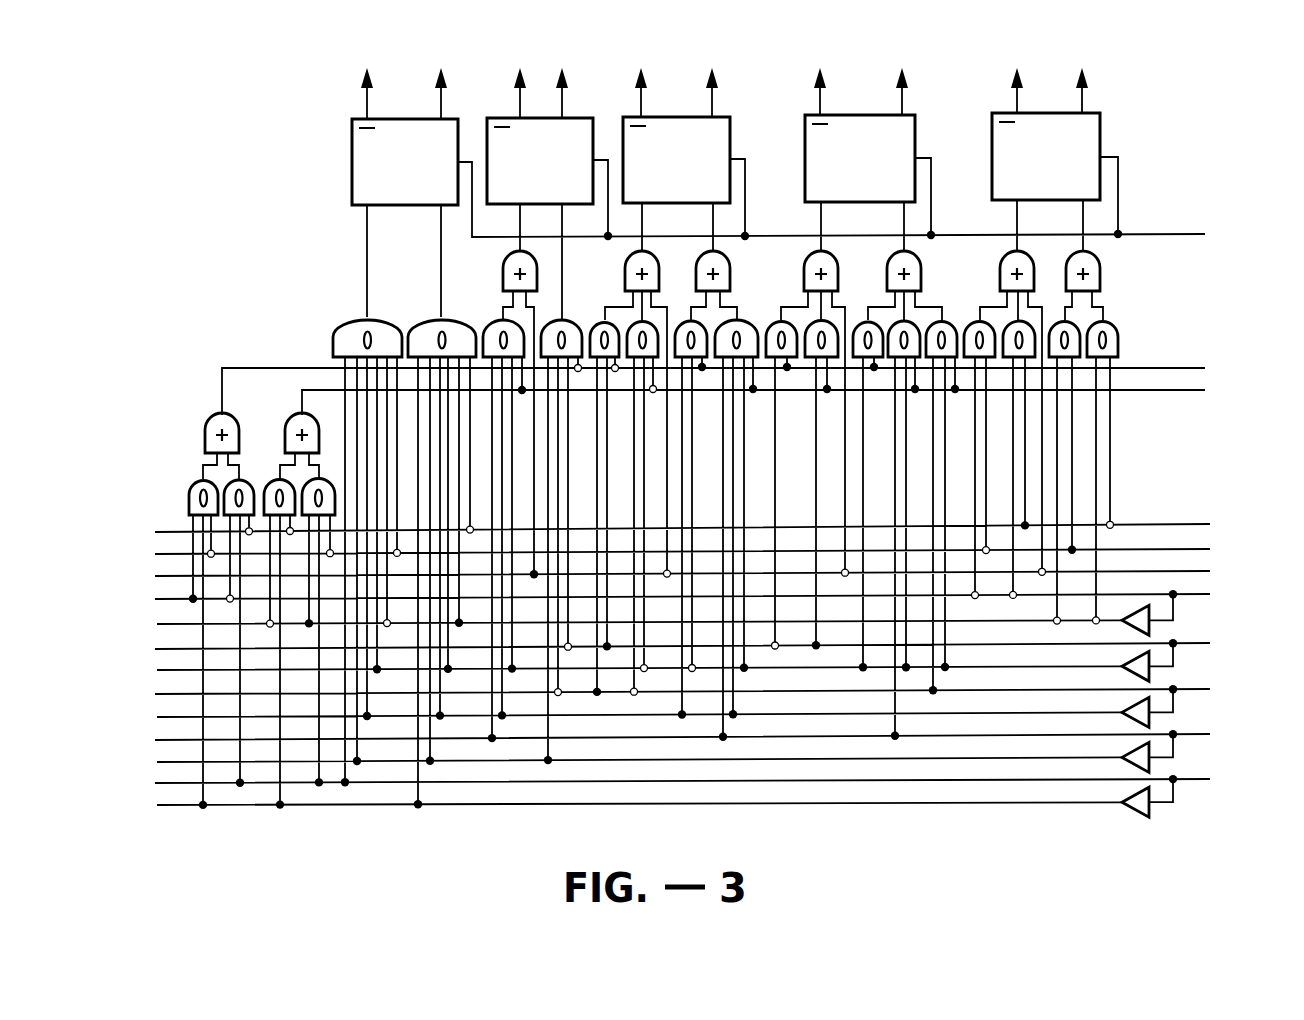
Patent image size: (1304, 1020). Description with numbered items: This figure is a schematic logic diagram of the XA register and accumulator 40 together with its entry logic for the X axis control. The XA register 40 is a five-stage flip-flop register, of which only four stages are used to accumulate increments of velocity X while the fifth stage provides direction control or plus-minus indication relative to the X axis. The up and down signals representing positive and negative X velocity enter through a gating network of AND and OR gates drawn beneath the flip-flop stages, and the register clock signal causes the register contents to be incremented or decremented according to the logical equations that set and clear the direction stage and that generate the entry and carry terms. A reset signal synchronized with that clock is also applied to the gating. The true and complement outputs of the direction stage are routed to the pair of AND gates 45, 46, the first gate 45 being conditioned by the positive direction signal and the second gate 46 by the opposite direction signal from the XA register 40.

The XA register and accumulator 40 is at (252, 285).
The AND gate 45 is at (325, 81).
The AND gate 46 is at (447, 81).